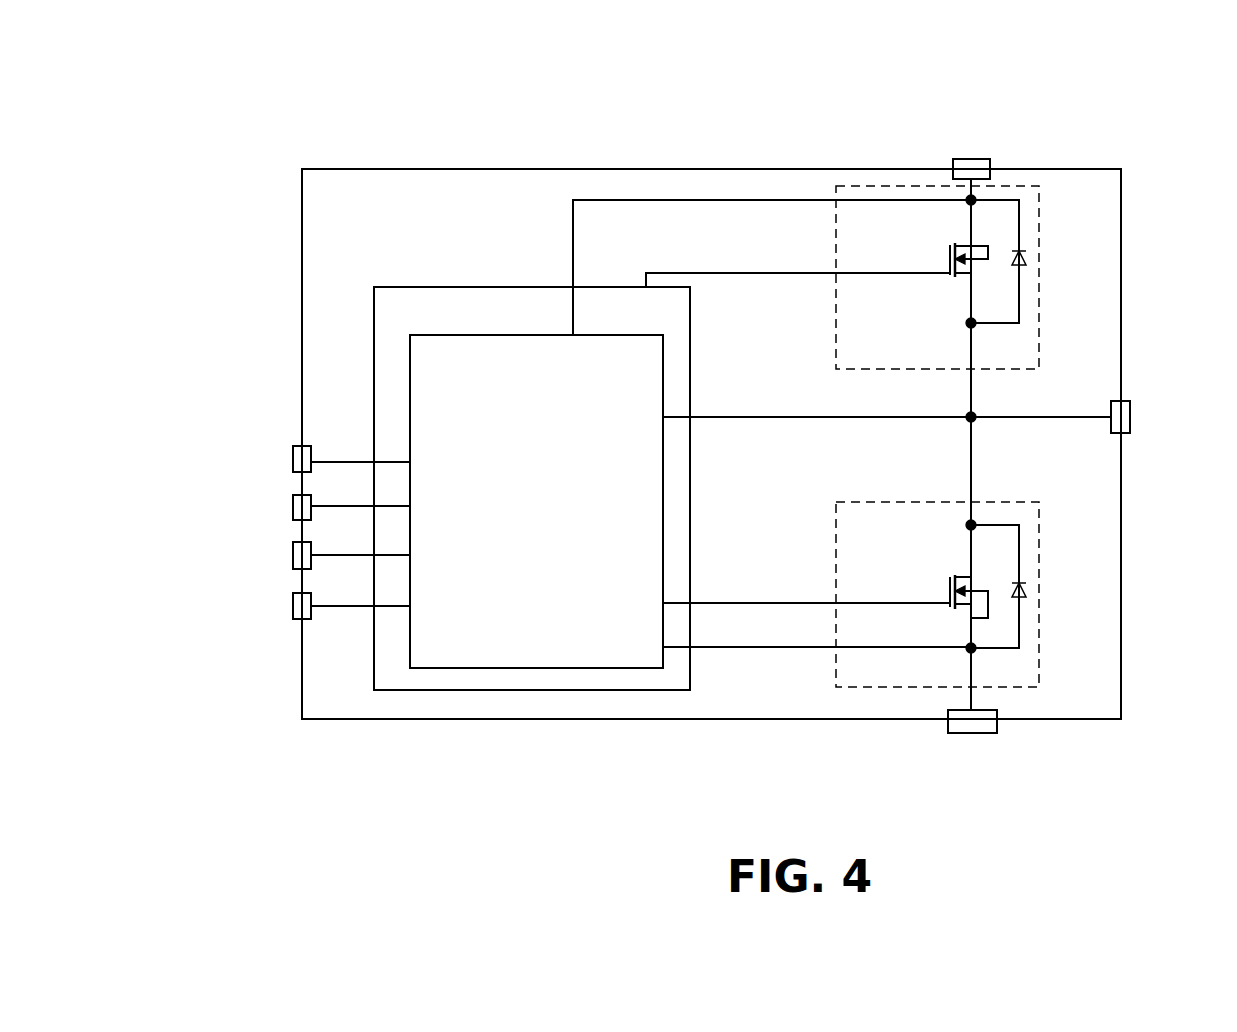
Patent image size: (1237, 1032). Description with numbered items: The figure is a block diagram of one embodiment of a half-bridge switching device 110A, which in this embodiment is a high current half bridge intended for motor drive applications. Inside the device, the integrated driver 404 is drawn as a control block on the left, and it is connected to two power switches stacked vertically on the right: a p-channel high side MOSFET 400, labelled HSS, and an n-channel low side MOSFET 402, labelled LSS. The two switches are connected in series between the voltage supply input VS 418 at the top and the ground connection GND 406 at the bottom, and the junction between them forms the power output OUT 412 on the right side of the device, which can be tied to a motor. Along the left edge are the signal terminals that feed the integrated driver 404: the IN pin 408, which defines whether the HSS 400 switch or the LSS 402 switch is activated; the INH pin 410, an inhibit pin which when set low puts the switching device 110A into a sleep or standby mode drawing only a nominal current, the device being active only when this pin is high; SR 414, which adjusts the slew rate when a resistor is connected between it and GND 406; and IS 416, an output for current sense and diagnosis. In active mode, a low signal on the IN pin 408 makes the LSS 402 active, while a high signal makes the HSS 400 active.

The half-bridge switching device 110A is at (305, 99).
The p-channel high side MOSFET 400 is at (940, 252).
The n-channel low side MOSFET 402 is at (940, 567).
The integrated driver 404 is at (693, 370).
The GND 406 is at (972, 735).
The IN pin 408 is at (293, 460).
The INH pin 410 is at (293, 505).
The OUT pin 412 is at (1137, 403).
The SR 414 is at (293, 554).
The IS 416 is at (293, 605).
The VS 418 is at (972, 157).